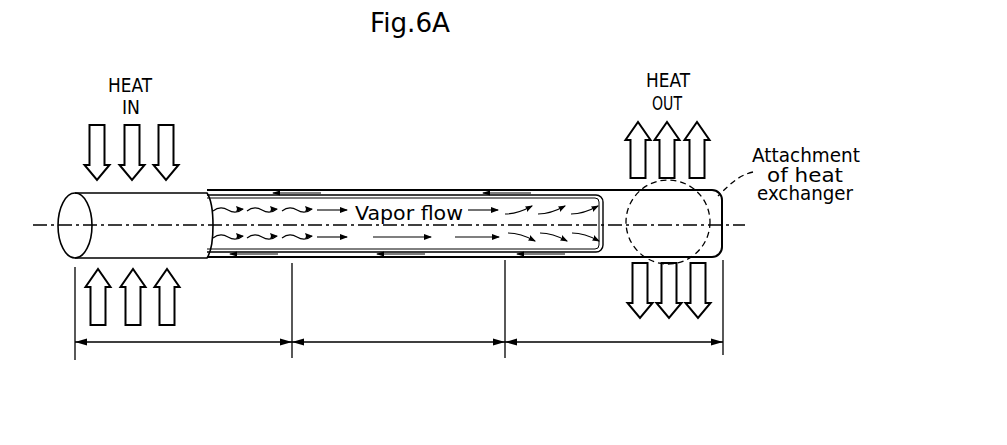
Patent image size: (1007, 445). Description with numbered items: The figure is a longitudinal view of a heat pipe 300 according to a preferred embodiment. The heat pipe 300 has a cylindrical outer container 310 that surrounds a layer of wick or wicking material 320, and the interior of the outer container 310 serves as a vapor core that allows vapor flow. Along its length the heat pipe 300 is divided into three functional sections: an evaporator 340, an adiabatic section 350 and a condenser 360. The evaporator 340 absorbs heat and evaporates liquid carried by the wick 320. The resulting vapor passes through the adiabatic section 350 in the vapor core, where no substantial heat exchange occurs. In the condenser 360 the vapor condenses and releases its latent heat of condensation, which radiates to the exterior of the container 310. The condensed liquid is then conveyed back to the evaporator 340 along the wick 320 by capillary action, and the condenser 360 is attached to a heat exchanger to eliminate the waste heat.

The heat pipe 300 is at (65, 194).
The outer container 310 is at (188, 192).
The wick 320 is at (265, 191).
The evaporator 340 is at (183, 318).
The adiabatic section 350 is at (398, 316).
The condenser 360 is at (614, 316).